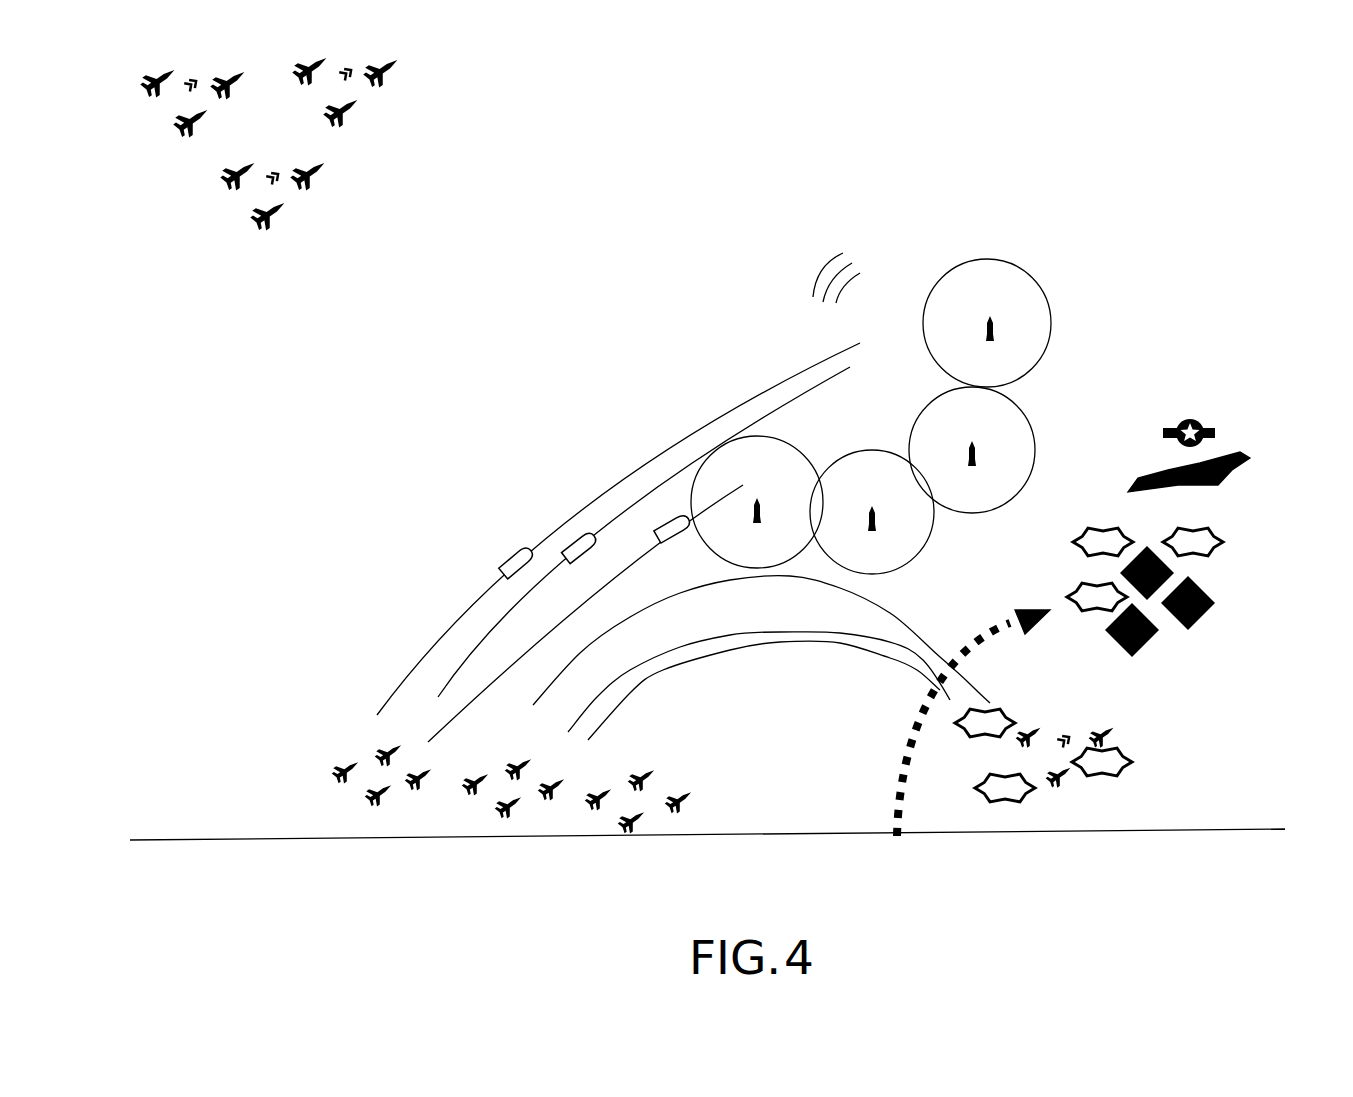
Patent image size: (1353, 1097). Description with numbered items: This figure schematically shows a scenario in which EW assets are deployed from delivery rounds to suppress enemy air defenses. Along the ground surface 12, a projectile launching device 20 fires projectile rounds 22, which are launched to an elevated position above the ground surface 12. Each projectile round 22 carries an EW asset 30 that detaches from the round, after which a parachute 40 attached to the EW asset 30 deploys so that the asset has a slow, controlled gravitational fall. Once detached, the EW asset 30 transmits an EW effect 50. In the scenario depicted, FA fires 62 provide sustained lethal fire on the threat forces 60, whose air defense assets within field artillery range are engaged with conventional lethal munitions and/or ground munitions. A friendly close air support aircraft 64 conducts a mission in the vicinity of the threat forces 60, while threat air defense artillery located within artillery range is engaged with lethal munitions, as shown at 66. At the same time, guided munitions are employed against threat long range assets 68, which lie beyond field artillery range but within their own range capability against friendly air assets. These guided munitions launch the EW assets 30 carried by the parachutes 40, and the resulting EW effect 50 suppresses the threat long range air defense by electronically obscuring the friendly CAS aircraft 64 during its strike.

The ground surface 12 is at (1155, 828).
The projectile launching device 20 is at (371, 745).
The projectile round 22 is at (678, 520).
The EW asset 30 is at (871, 416).
The parachute 40 is at (853, 477).
The EW effect 50 is at (862, 248).
The threat forces 60 is at (1160, 716).
The FA fires 62 is at (608, 842).
The friendly close air support (CAS) aircraft 64 is at (1218, 448).
The engagement of threat ADA with lethal munitions 66 is at (905, 808).
The threat long range assets 68 is at (363, 127).